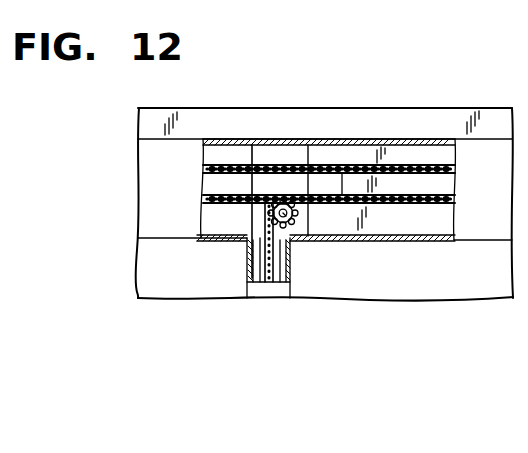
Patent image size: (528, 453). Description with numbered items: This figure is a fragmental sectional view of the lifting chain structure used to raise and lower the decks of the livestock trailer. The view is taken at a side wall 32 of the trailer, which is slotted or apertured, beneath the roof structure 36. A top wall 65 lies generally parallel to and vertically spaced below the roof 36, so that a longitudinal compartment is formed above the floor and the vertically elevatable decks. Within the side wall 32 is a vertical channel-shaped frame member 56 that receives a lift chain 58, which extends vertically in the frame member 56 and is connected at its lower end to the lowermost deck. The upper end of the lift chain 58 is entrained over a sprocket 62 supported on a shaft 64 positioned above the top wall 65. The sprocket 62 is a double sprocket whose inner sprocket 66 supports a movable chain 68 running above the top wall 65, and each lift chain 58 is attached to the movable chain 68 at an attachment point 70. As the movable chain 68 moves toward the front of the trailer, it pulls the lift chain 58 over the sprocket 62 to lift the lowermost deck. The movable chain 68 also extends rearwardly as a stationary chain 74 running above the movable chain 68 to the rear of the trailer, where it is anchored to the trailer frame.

The side wall 32 is at (447, 283).
The roof structure 36 is at (377, 122).
The vertical channel-shaped frame member 56 is at (270, 287).
The lift chain 58 is at (246, 264).
The sprocket 62 is at (282, 200).
The shaft 64 is at (250, 217).
The top wall 65 is at (390, 243).
The inner sprocket 66 is at (289, 221).
The movable chain 68 is at (397, 195).
The attachment point 70 is at (340, 166).
The stationary chain 74 is at (245, 164).